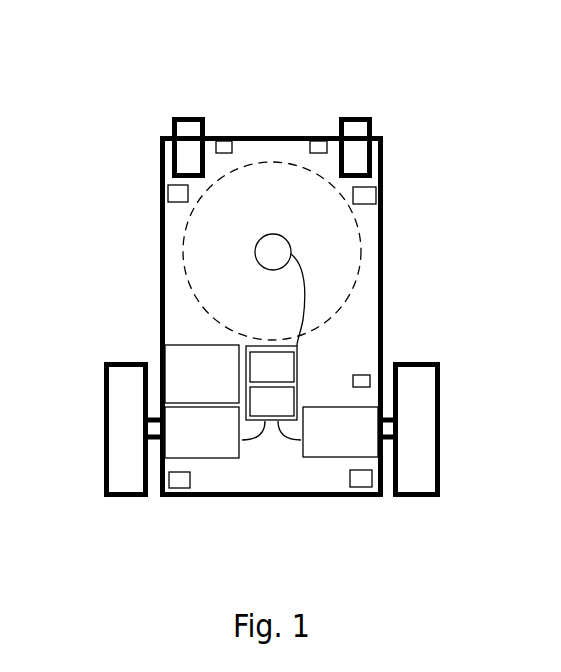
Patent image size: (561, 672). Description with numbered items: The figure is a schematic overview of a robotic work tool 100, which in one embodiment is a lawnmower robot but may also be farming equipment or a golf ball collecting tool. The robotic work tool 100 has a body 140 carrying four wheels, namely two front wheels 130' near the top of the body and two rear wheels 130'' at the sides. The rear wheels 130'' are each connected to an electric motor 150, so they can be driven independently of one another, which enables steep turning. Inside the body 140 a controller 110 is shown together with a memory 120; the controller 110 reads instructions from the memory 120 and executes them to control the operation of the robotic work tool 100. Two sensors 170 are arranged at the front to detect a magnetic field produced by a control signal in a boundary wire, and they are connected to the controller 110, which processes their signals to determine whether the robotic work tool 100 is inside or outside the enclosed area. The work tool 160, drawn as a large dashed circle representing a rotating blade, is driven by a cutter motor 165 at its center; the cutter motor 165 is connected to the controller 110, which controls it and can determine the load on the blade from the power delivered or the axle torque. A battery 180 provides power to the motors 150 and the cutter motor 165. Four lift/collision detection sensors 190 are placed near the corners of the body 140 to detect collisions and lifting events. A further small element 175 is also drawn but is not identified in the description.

The robotic work tool 100 is at (150, 170).
The controller 110 is at (297, 367).
The memory 120 is at (297, 400).
The front wheels 130' is at (324, 172).
The rear wheels 130'' is at (236, 473).
The body 140 is at (181, 497).
The electric motor 150 is at (308, 442).
The work tool 160 is at (193, 290).
The cutter motor 165 is at (255, 258).
The sensor 170 is at (300, 136).
The sensor 175 is at (370, 381).
The battery 180 is at (176, 365).
The lift/collision detection sensor 190 is at (168, 190).